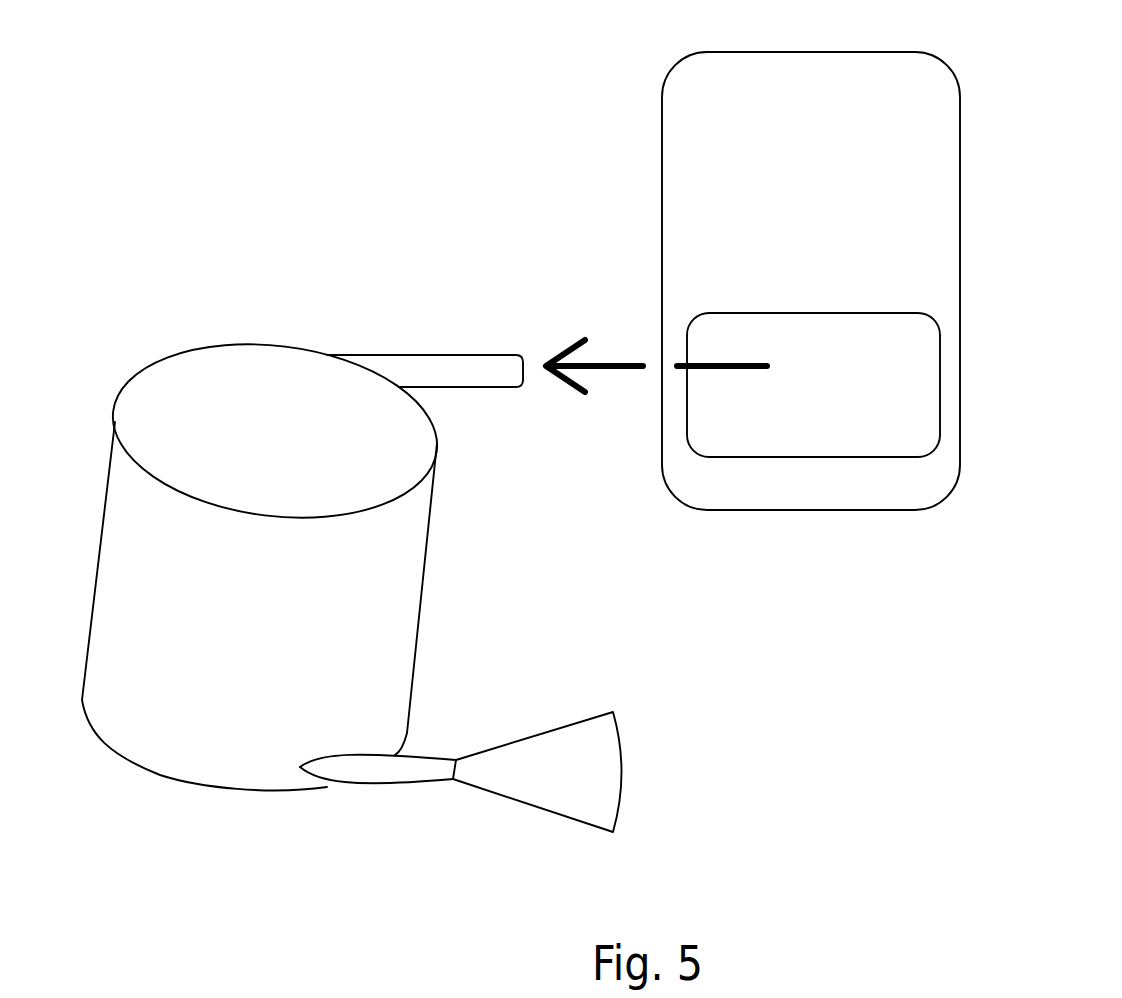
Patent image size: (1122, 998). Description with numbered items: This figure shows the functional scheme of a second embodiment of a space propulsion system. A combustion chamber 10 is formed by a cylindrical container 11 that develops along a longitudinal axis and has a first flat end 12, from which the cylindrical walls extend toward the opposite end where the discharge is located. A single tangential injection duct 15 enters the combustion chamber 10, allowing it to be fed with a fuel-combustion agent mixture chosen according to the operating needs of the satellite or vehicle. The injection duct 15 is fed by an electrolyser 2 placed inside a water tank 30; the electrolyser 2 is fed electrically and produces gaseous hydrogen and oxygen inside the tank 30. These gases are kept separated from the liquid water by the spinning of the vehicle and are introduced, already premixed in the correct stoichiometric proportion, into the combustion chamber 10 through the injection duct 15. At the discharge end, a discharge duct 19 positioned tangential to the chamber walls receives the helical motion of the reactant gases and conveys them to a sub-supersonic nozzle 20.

The electrolyser 2 is at (802, 423).
The combustion chamber 10 is at (217, 247).
The cylindrical container 11 is at (222, 813).
The first flat end 12 is at (195, 388).
The tangential injection duct 15 is at (427, 367).
The discharge duct 19 is at (407, 773).
The sub-supersonic nozzle 20 is at (580, 752).
The tank 30 is at (745, 188).